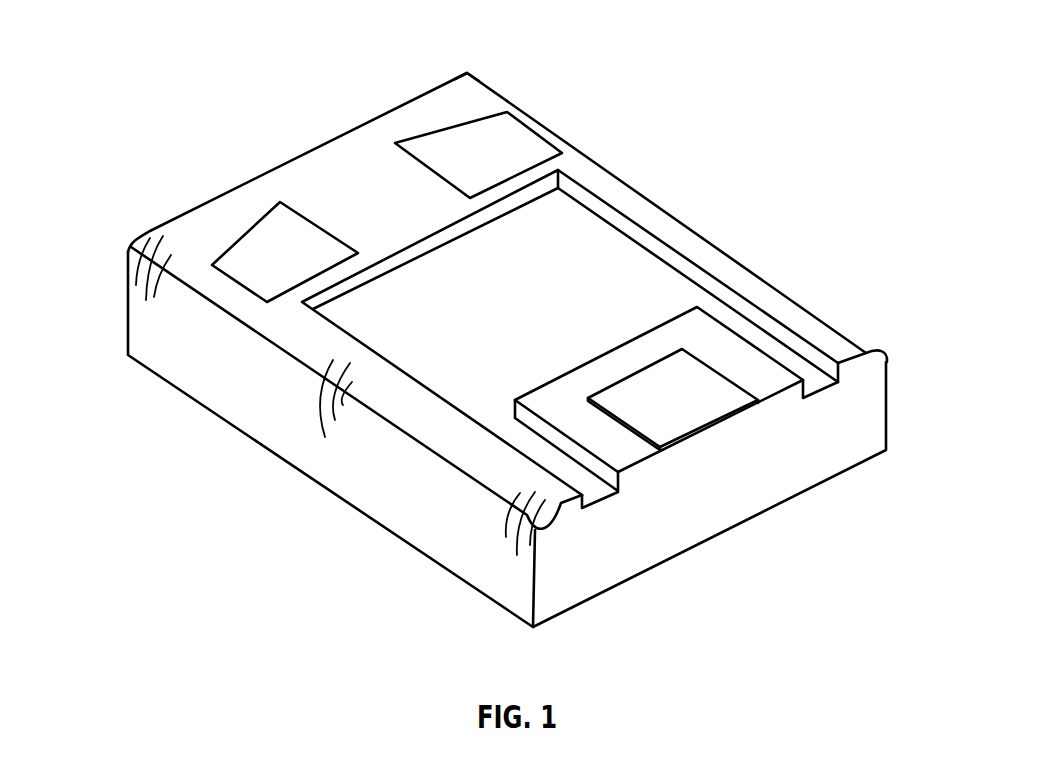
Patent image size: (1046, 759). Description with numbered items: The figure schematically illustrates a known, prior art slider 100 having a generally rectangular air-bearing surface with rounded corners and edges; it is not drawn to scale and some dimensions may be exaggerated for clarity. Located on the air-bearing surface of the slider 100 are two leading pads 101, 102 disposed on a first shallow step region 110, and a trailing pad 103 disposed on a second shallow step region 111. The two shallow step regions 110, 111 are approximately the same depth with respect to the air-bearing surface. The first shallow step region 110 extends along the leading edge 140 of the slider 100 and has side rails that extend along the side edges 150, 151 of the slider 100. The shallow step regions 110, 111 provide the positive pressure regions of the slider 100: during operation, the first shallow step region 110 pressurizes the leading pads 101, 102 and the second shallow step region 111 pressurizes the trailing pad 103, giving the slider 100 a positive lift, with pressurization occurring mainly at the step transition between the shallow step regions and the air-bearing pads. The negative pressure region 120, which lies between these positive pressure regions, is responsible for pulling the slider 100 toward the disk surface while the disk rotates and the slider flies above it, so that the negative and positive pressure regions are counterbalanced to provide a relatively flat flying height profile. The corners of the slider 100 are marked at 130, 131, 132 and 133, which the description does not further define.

The slider 100 is at (471, 319).
The leading pad 101 is at (300, 268).
The leading pad 102 is at (502, 171).
The trailing pad 103 is at (688, 418).
The first shallow step region 110 is at (503, 287).
The second shallow step region 111 is at (659, 399).
The negative pressure region 120 is at (570, 332).
The back corner 130 is at (466, 73).
The right front corner 131 is at (880, 351).
The left front corner 132 is at (543, 523).
The left back corner 133 is at (136, 248).
The leading edge 140 is at (300, 156).
The side edge 150 is at (670, 207).
The side edge 151 is at (343, 394).